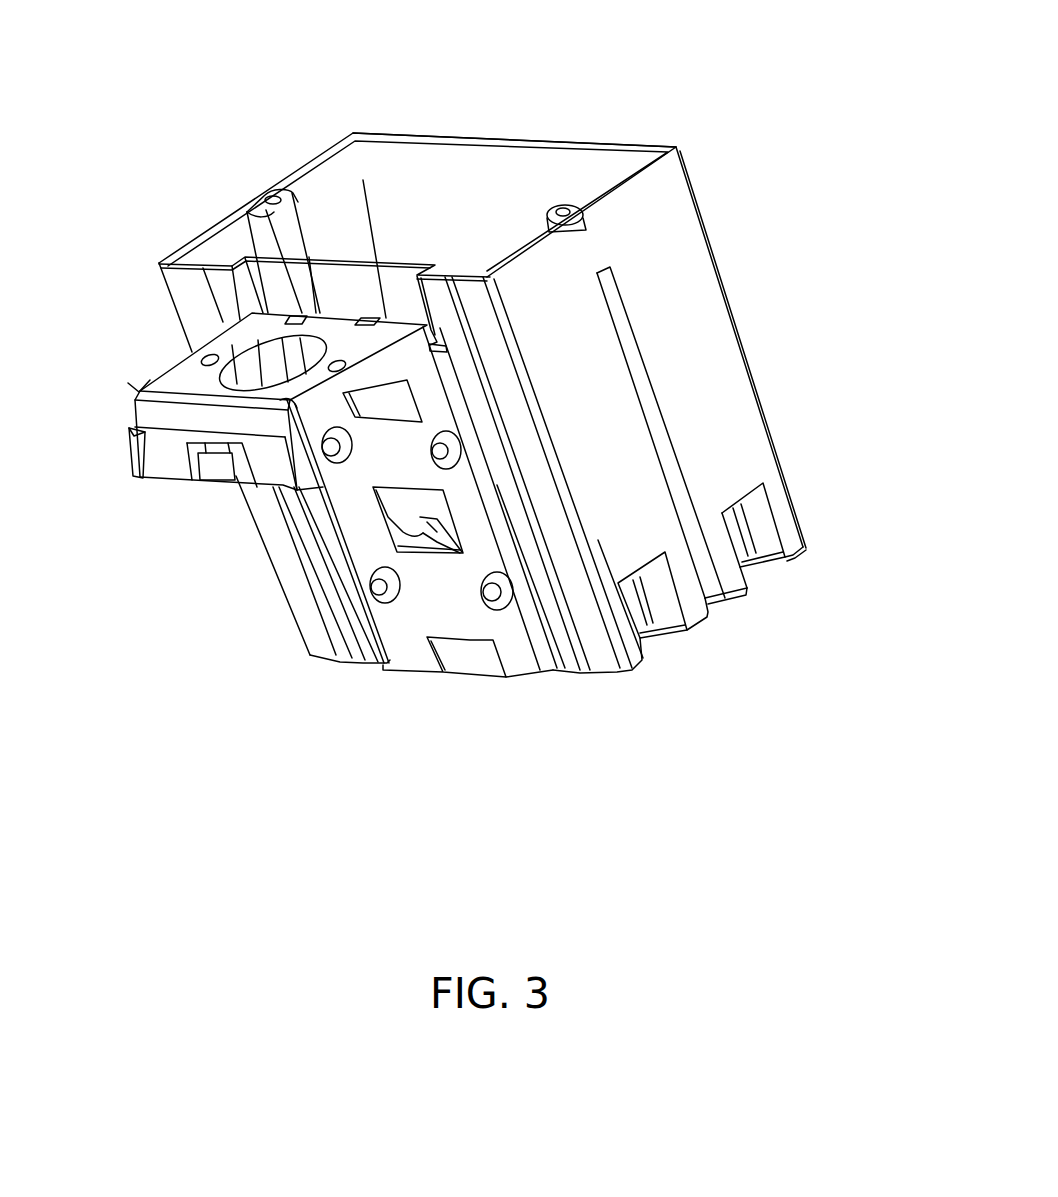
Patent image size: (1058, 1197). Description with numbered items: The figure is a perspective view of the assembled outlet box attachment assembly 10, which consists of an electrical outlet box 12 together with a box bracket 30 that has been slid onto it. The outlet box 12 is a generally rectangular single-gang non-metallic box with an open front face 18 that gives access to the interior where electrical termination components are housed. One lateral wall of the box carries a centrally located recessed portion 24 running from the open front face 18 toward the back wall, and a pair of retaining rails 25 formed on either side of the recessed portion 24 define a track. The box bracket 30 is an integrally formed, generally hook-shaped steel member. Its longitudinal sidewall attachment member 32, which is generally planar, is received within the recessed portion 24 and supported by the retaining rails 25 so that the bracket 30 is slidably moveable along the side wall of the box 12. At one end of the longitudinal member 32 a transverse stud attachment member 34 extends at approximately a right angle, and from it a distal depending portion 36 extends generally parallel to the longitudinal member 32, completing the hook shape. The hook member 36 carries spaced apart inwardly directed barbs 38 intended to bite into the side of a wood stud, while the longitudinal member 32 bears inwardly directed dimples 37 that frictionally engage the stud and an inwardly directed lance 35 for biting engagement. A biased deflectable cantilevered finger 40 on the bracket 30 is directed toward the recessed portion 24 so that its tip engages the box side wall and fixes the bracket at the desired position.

The outlet box attachment assembly 10 is at (670, 66).
The electrical outlet box 12 is at (702, 330).
The open front face 18 is at (447, 137).
The recessed portion 24 is at (315, 280).
The retaining rails 25 is at (447, 370).
The box bracket 30 is at (178, 373).
The longitudinal sidewall attachment member 32 is at (480, 620).
The transverse stud attachment member 34 is at (163, 393).
The lance 35 is at (433, 547).
The distal depending portion 36 is at (175, 473).
The dimples 37 is at (388, 600).
The barbs 38 is at (135, 432).
The cantilevered finger 40 is at (371, 380).